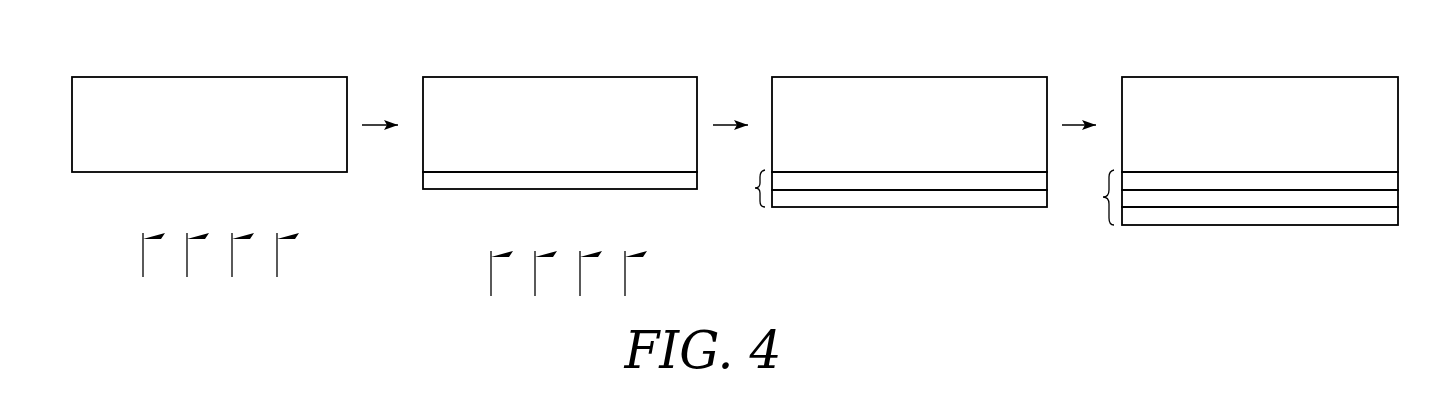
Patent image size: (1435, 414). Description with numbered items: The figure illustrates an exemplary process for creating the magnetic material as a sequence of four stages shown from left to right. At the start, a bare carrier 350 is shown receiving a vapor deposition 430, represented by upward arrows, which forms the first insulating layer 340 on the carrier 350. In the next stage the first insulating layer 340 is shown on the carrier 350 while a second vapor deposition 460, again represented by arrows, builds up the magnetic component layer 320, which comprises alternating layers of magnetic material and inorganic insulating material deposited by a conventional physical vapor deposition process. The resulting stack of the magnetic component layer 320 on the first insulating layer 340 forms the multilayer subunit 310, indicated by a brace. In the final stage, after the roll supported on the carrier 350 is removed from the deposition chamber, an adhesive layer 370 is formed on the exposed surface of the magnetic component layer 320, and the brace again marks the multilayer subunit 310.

The multilayer subunit 310 is at (755, 188).
The magnetic component layer 320 is at (846, 198).
The first insulating layer 340 is at (452, 180).
The carrier 350 is at (259, 88).
The adhesive layer 370 is at (1220, 215).
The vapor deposition of first insulating layer 430 is at (277, 258).
The vapor deposition of magnetic component layer 460 is at (625, 276).